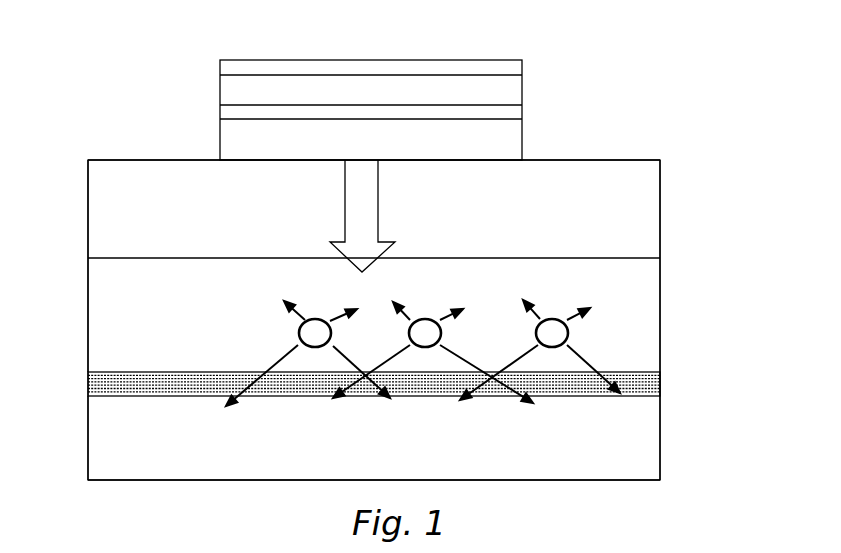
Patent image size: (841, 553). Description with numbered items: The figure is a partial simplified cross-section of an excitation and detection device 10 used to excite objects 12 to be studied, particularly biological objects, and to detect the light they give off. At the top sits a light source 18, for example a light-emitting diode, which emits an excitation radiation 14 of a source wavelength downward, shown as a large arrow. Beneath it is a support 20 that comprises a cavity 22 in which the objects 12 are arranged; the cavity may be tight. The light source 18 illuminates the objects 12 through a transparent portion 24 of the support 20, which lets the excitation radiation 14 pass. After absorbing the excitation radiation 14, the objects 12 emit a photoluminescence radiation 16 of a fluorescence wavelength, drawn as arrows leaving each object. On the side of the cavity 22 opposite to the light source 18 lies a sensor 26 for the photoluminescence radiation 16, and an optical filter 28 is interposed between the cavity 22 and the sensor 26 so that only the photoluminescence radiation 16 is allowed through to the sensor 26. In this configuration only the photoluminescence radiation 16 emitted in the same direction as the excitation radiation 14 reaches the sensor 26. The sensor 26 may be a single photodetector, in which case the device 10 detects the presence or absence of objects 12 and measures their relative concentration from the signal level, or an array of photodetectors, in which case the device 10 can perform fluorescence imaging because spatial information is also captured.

The excitation and detection device 10 is at (663, 79).
The objects to be studied 12 is at (558, 333).
The excitation radiation 14 is at (357, 192).
The photoluminescence radiation 16 is at (590, 362).
The light source 18 is at (510, 92).
The support 20 is at (674, 205).
The cavity 22 is at (643, 278).
The transparent portion of support 24 is at (110, 209).
The sensor 26 is at (643, 456).
The optical filter 28 is at (662, 384).